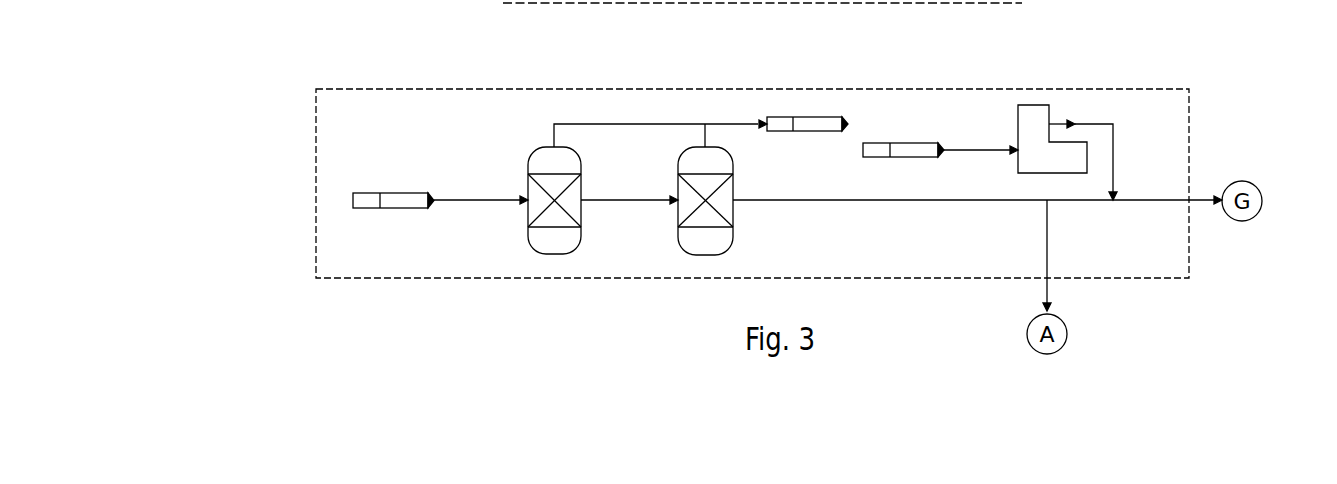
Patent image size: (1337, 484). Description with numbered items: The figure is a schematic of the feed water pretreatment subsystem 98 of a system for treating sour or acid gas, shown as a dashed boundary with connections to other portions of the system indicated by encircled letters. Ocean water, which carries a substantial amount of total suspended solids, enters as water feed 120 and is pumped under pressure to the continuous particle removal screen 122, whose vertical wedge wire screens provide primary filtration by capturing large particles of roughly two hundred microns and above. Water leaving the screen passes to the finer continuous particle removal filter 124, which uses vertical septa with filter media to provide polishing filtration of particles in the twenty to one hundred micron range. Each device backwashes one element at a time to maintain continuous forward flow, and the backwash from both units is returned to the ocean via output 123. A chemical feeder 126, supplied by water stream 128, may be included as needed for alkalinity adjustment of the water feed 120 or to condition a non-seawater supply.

The feed water pretreatment subsystem 98 is at (1110, 89).
The water feed 120 is at (400, 193).
The continuous particle removal screen 122 is at (583, 237).
The continuous particle removal filter 124 is at (735, 237).
The output 123 is at (805, 133).
The water stream 128 is at (908, 143).
The chemical feeder 126 is at (1063, 169).